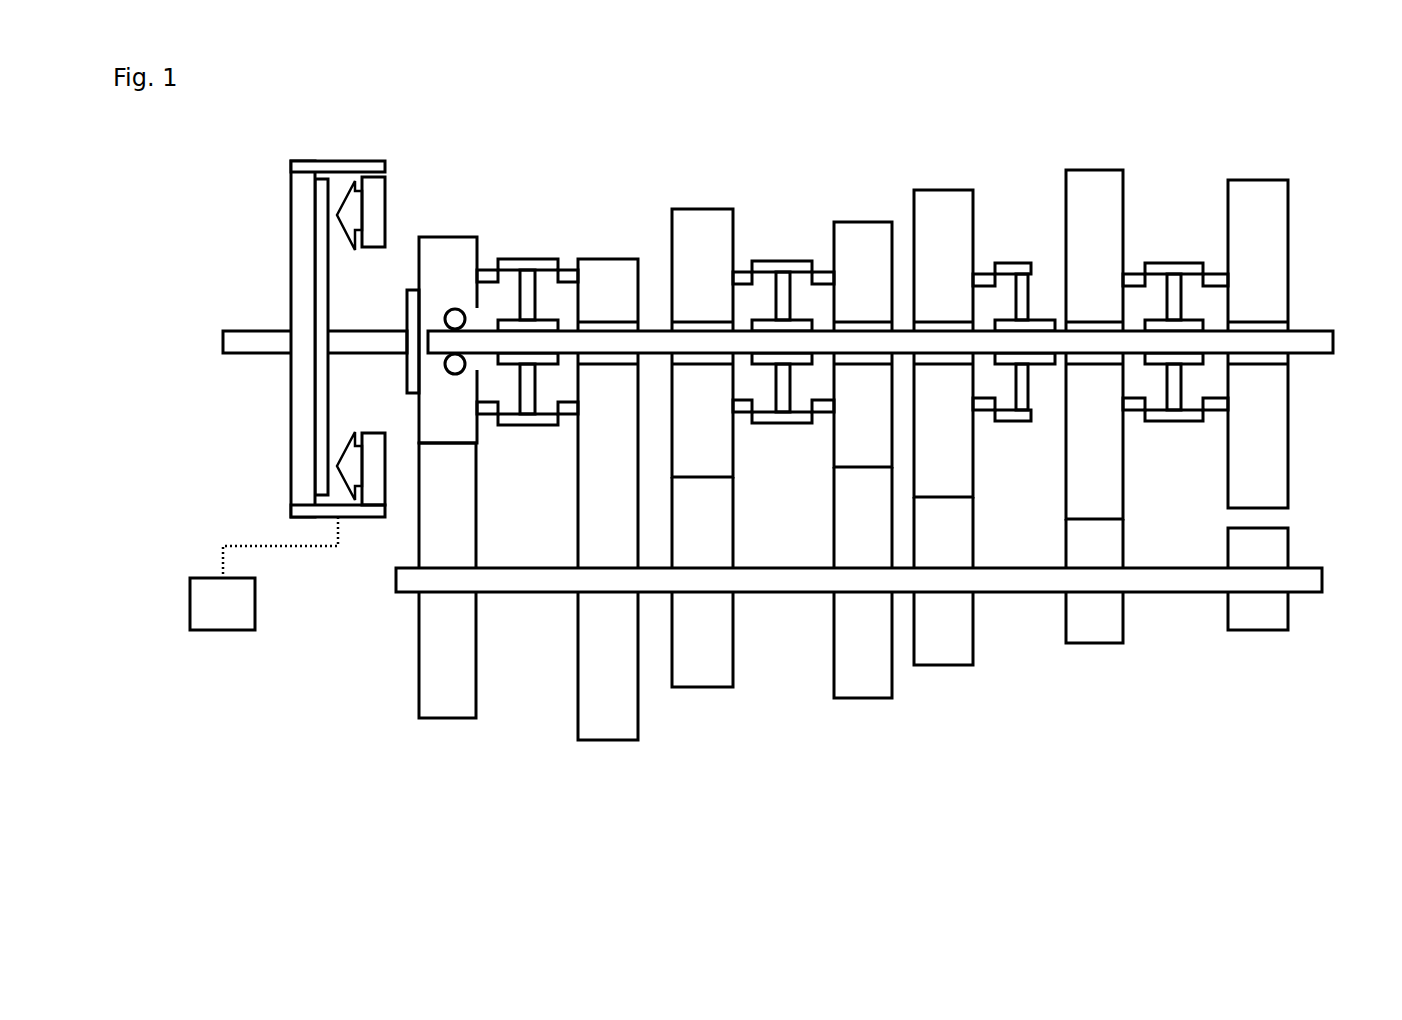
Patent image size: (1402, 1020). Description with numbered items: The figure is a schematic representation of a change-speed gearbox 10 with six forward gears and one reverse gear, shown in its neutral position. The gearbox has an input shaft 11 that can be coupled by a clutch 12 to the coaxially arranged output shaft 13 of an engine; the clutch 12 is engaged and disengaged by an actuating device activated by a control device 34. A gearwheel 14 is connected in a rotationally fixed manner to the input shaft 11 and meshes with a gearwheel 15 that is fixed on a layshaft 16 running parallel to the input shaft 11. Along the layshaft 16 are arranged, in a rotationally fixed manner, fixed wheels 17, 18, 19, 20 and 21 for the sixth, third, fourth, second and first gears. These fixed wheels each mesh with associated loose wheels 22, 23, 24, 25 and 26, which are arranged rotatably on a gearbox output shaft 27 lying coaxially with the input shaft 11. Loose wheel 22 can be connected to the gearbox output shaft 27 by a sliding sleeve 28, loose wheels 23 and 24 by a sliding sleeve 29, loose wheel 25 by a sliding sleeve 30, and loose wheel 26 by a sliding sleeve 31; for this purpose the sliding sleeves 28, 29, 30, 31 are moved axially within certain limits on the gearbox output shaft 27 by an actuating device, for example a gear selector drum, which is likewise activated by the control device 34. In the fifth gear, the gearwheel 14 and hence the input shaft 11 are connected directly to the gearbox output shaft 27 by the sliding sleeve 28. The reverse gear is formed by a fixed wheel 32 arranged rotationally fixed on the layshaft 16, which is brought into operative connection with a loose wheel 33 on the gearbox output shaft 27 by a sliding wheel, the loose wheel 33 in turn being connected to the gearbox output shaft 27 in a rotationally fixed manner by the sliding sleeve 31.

The change-speed gearbox 10 is at (312, 708).
The input shaft 11 is at (368, 328).
The clutch 12 is at (310, 162).
The output shaft of an engine 13 is at (270, 328).
The gearwheel 14 is at (444, 237).
The gearwheel 15 is at (419, 703).
The layshaft 16 is at (530, 592).
The fixed wheel 17 is at (572, 722).
The fixed wheel 18 is at (690, 688).
The fixed wheel 19 is at (850, 699).
The fixed wheel 20 is at (945, 666).
The fixed wheel 21 is at (1082, 644).
The loose wheel 22 is at (597, 259).
The loose wheel 23 is at (688, 209).
The loose wheel 24 is at (847, 222).
The loose wheel 25 is at (926, 190).
The loose wheel 26 is at (1080, 170).
The gearbox output shaft 27 is at (1318, 331).
The sliding sleeve 28 is at (520, 259).
The sliding sleeve 29 is at (764, 261).
The sliding sleeve 30 is at (1022, 263).
The sliding sleeve 31 is at (1162, 263).
The fixed wheel 32 is at (1256, 631).
The loose wheel 33 is at (1238, 180).
The control device 34 is at (216, 631).